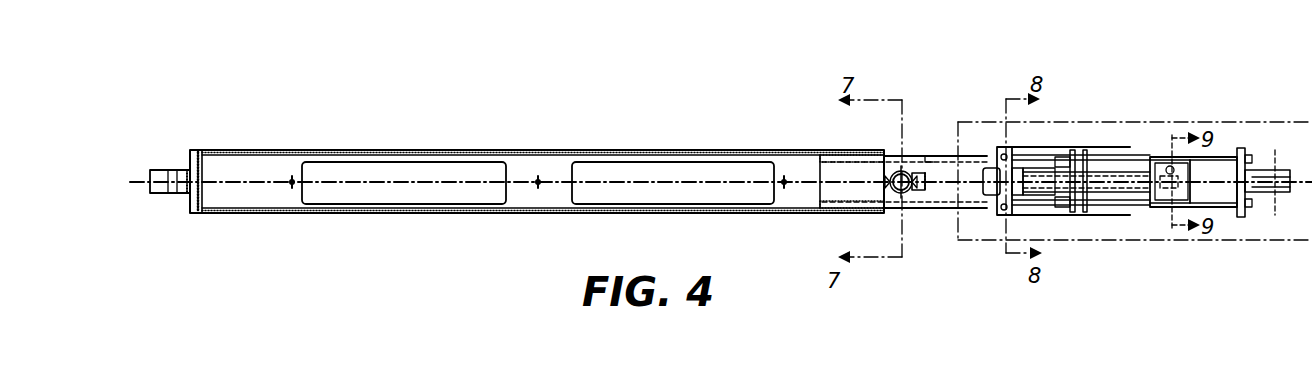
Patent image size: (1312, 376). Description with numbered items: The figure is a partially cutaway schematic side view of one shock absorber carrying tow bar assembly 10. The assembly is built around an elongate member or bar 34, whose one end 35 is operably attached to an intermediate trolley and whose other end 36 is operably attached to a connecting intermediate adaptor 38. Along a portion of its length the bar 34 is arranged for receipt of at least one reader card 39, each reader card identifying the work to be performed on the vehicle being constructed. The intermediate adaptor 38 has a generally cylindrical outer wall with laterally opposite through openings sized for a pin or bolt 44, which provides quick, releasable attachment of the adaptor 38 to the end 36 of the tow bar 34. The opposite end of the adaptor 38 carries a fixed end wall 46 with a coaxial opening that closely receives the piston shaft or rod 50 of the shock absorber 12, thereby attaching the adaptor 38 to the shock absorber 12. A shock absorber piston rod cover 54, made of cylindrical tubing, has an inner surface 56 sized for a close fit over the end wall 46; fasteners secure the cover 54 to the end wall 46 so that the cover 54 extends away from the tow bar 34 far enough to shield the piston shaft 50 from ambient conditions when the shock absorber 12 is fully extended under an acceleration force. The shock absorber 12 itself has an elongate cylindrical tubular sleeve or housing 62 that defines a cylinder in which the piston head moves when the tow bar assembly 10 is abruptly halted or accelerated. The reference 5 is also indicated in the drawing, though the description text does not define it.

The blade assembly 5 is at (1185, 242).
The tow bar assembly 10 is at (984, 71).
The shock absorber 12 is at (1217, 122).
The bar 34 is at (508, 150).
The end 35 is at (149, 172).
The end 36 is at (931, 162).
The intermediate adaptor 38 is at (941, 206).
The reader card 39 is at (368, 172).
The pin or bolt 44 is at (905, 194).
The end wall 46 is at (996, 148).
The piston shaft or rod 50 is at (1040, 196).
The shock absorber piston rod cover 54 is at (1097, 147).
The inner surface 56 is at (1030, 158).
The housing 62 is at (1153, 158).